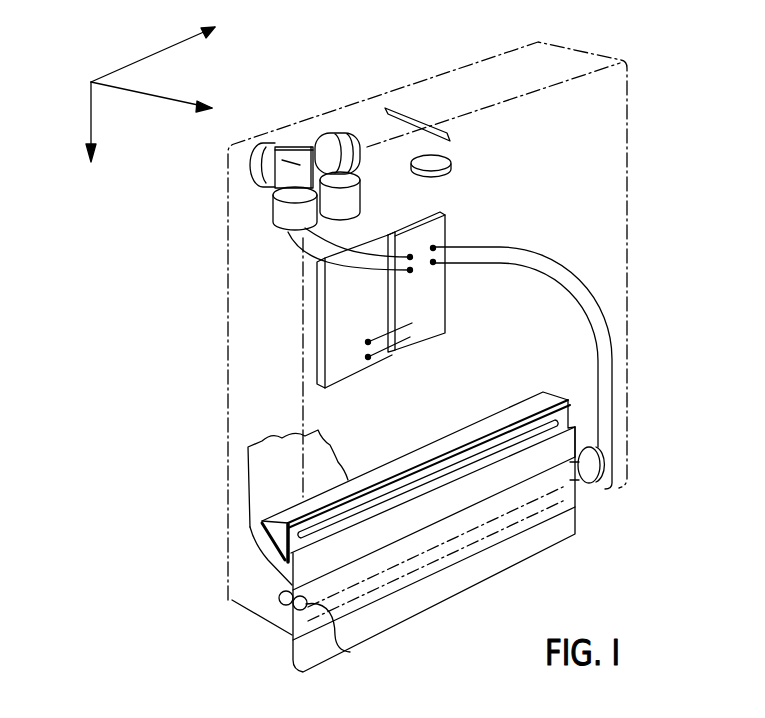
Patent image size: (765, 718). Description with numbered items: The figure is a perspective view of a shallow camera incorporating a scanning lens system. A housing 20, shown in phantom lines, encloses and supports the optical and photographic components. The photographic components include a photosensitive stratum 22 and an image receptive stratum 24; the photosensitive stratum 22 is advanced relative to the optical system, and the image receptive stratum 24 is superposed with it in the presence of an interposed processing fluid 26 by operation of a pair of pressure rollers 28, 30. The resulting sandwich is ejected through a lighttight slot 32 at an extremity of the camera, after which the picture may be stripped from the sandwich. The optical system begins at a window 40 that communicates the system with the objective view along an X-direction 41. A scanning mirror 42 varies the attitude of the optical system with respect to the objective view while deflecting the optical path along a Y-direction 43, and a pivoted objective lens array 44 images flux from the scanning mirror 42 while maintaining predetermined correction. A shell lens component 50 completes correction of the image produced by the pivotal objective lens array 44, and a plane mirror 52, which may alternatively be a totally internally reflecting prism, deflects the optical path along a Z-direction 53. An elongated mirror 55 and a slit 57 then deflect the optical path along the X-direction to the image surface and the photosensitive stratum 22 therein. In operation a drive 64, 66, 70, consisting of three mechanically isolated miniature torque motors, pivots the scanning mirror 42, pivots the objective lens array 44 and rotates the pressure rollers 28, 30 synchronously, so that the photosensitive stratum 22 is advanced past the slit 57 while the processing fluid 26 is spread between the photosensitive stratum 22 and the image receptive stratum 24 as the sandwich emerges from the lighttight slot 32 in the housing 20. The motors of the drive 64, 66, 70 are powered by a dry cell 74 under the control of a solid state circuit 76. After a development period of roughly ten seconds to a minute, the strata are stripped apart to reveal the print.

The housing 20 is at (224, 377).
The photosensitive stratum 22 is at (312, 666).
The image receptive stratum 24 is at (290, 667).
The processing fluid 26 is at (286, 573).
The pressure roller 28 is at (287, 598).
The pressure roller 30 is at (350, 652).
The lighttight slot 32 is at (290, 630).
The window 40 is at (254, 152).
The X-direction 41 is at (140, 97).
The scanning mirror 42 is at (298, 147).
The Y-direction 43 is at (168, 52).
The pivoted objective lens array 44 is at (345, 127).
The shell lens component 50 is at (450, 161).
The plane mirror 52 is at (433, 117).
The Z-direction 53 is at (93, 133).
The elongated mirror 55 is at (474, 430).
The slit 57 is at (362, 512).
The drive 64 is at (282, 221).
The drive 66 is at (356, 204).
The drive 70 is at (598, 484).
The dry cell 74 is at (344, 370).
The solid state circuit 76 is at (428, 334).